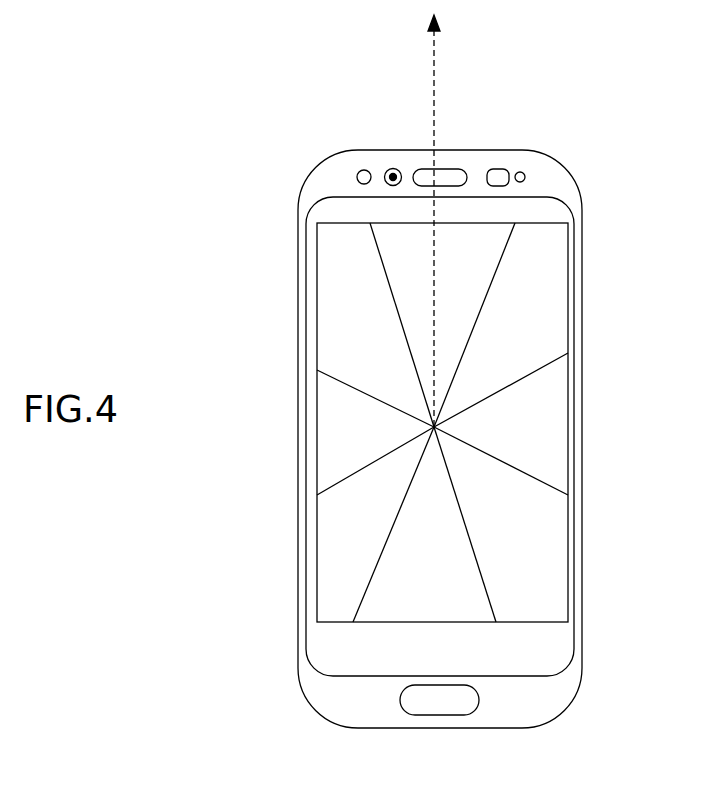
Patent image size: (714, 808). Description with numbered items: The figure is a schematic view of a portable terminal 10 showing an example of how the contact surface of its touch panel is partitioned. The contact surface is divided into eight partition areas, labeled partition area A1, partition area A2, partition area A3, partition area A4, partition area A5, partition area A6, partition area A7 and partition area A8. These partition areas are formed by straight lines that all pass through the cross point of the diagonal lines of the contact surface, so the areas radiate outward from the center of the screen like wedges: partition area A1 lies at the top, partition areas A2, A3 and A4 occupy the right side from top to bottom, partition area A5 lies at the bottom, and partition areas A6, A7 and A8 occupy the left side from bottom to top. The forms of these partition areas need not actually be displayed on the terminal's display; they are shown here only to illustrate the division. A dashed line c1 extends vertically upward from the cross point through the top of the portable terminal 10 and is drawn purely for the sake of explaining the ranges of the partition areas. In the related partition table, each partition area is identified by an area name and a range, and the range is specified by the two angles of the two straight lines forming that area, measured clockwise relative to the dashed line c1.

The portable terminal 10 is at (313, 172).
The dashed line c1 is at (434, 66).
The partition area A1 is at (453, 240).
The partition area A2 is at (555, 312).
The partition area A3 is at (555, 420).
The partition area A4 is at (555, 559).
The partition area A5 is at (410, 605).
The partition area A6 is at (336, 560).
The partition area A7 is at (336, 434).
The partition area A8 is at (336, 301).